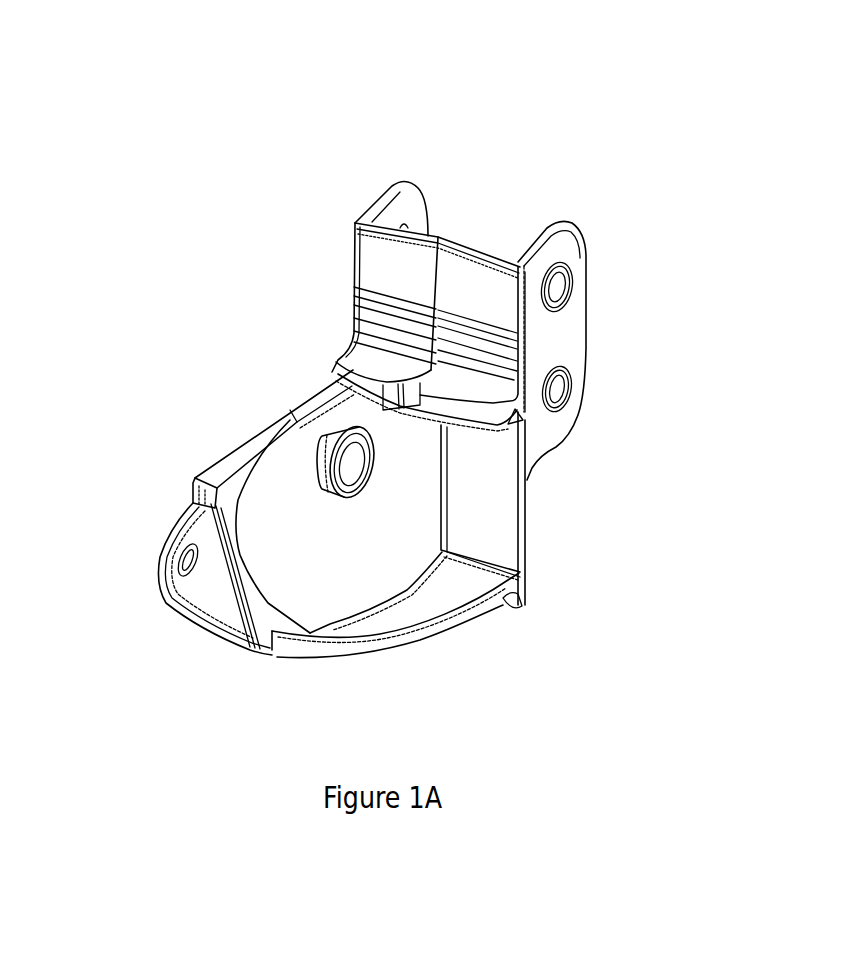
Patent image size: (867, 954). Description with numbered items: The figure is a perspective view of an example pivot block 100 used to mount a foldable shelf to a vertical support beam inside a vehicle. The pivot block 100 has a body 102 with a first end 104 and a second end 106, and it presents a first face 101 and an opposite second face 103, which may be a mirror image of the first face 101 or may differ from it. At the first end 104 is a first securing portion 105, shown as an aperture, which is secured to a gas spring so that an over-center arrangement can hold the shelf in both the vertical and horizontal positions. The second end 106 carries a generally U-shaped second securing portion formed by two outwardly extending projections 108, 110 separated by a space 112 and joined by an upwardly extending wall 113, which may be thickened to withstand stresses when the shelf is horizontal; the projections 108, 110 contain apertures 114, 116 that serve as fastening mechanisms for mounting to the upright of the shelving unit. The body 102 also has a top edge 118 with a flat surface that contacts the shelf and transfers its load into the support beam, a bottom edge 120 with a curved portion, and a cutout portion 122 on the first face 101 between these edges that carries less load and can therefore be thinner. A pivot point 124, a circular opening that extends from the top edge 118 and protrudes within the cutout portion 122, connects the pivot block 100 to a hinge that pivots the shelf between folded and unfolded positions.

The pivot block 100 is at (203, 98).
The first face 101 is at (503, 518).
The body 102 is at (187, 368).
The second face 103 is at (175, 463).
The first end 104 is at (187, 670).
The first securing portion 105 is at (175, 532).
The second end 106 is at (615, 335).
The outwardly extending projection 108 is at (583, 298).
The outwardly extending projection 110 is at (383, 192).
The space 112 is at (490, 207).
The upwardly extending wall 113 is at (354, 260).
The aperture 114 is at (570, 268).
The aperture 116 is at (567, 390).
The top edge 118 is at (237, 443).
The bottom edge 120 is at (400, 650).
The cutout portion 122 is at (520, 608).
The pivot point 124 is at (337, 432).